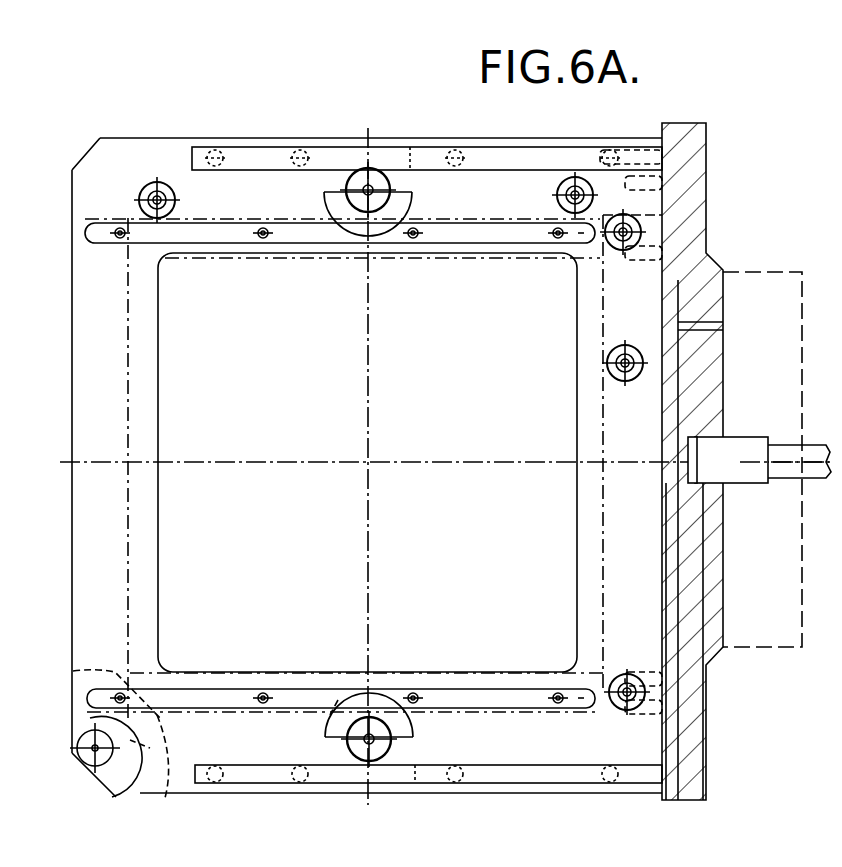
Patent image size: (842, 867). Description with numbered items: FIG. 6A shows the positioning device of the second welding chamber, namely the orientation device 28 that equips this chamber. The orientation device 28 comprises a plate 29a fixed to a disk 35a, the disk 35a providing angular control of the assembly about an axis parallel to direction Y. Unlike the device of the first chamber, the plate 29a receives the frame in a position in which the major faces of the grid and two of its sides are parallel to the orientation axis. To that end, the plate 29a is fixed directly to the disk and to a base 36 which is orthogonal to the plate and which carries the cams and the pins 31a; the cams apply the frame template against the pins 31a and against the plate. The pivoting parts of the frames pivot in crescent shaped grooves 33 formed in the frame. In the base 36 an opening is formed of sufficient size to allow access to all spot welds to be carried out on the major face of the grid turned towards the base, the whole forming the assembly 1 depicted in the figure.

The orientation device 28 is at (380, 123).
The pins 31a is at (159, 186).
The plate 29a is at (688, 196).
The disk 35a is at (786, 448).
The base 36 is at (622, 555).
The frame 1 is at (478, 673).
The crescent shaped grooves 33 is at (110, 676).